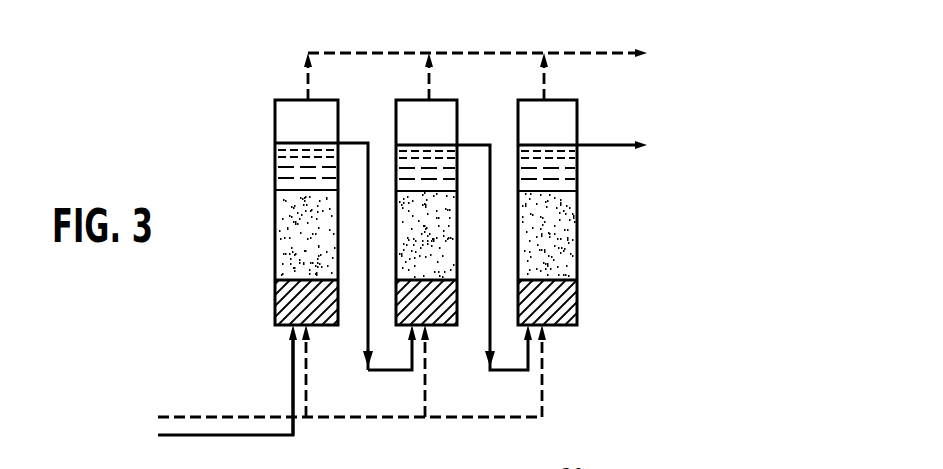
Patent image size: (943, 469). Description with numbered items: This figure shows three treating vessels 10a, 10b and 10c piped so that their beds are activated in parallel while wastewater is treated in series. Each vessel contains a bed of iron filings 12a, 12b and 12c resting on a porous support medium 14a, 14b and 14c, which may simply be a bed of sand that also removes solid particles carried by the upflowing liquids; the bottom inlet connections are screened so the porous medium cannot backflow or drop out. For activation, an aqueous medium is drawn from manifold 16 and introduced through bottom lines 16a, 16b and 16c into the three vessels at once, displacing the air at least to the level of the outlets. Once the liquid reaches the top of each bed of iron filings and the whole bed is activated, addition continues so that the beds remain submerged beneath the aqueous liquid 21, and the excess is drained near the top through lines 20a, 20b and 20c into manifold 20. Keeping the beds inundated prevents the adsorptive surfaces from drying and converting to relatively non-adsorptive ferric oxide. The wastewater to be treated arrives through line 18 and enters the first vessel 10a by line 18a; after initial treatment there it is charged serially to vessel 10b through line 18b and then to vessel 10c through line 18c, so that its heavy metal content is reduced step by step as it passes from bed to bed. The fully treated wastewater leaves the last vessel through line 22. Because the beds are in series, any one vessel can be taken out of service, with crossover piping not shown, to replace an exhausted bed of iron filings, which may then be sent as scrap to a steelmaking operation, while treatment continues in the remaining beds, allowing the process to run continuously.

The vessel 10a is at (338, 108).
The vessel 10b is at (457, 130).
The vessel 10c is at (577, 126).
The bed of iron filings 12a is at (285, 246).
The bed of iron filings 12b is at (450, 272).
The bed of iron filings 12c is at (560, 245).
The porous support medium 14a is at (317, 309).
The porous support medium 14b is at (438, 312).
The porous support medium 14c is at (565, 307).
The activation medium manifold 16 is at (175, 415).
The activation medium line 16a is at (307, 370).
The activation medium line 16b is at (422, 392).
The activation medium line 16c is at (545, 378).
The wastewater line 18 is at (190, 436).
The wastewater inlet line 18a is at (292, 372).
The series transfer line 18b is at (380, 372).
The series transfer line 18c is at (507, 372).
The drain manifold 20 is at (372, 53).
The activation medium outlet line 20a is at (305, 82).
The activation medium outlet line 20b is at (431, 62).
The activation medium outlet line 20c is at (546, 82).
The aqueous liquid 21 is at (275, 173).
The treated wastewater outlet line 22 is at (600, 147).